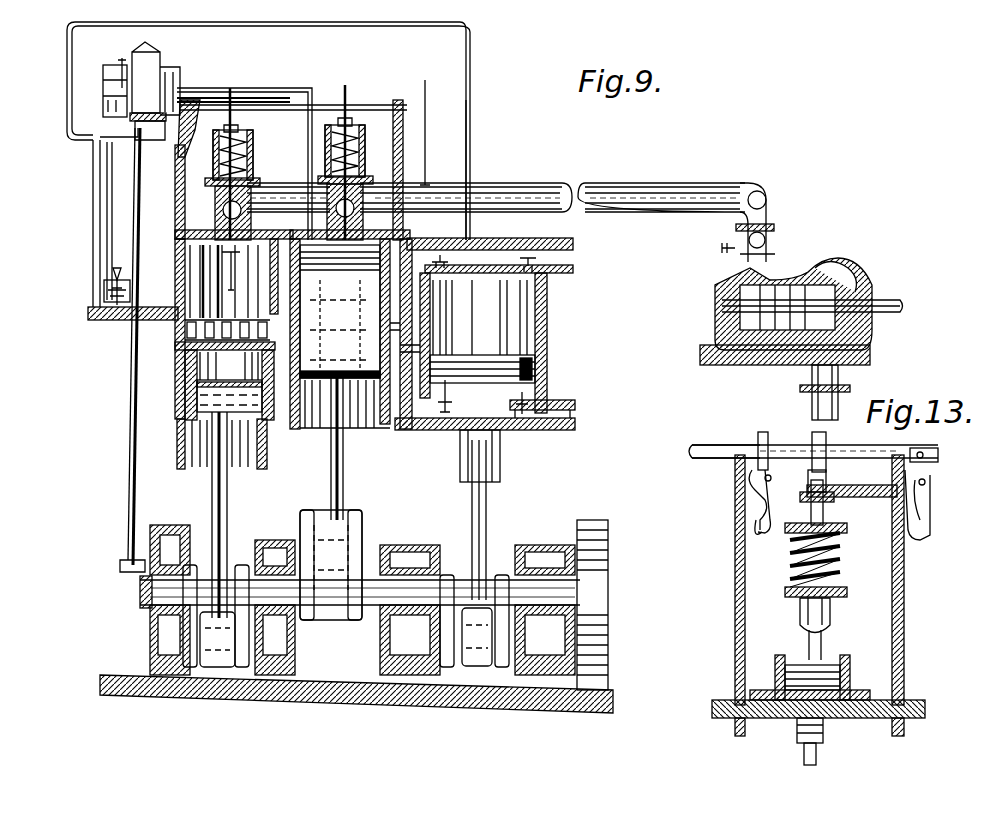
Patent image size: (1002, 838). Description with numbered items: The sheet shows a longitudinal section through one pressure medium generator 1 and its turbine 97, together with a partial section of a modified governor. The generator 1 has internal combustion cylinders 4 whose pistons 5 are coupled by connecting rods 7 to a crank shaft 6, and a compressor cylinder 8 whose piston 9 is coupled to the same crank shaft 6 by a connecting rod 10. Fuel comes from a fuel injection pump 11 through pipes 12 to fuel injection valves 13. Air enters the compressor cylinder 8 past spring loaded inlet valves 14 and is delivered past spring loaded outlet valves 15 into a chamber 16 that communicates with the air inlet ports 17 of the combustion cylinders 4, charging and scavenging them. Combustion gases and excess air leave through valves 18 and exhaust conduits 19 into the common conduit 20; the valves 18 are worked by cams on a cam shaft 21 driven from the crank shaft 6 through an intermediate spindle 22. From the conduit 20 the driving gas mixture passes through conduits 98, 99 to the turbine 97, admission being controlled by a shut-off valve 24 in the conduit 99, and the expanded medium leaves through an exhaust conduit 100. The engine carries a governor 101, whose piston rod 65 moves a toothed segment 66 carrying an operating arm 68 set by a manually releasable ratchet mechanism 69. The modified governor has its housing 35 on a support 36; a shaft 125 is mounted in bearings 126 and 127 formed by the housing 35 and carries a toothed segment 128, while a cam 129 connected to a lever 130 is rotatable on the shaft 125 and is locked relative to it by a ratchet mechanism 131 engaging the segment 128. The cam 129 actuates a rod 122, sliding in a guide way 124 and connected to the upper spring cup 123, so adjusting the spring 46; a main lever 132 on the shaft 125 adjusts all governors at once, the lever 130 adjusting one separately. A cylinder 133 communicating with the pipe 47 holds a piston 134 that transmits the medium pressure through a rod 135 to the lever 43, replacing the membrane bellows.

In FIG. 9, the pressure medium generator 1 is at (150, 672).
In FIG. 9, the internal combustion cylinder 4 is at (185, 370).
In FIG. 9, the piston 5 is at (177, 446).
In FIG. 9, the crank shaft 6 is at (396, 585).
In FIG. 9, the connecting rod 7 is at (227, 493).
In FIG. 9, the compressor cylinder 8 is at (547, 327).
In FIG. 9, the compressor piston 9 is at (540, 365).
In FIG. 9, the connecting rod 10 is at (486, 500).
In FIG. 9, the fuel injection pump 11 is at (180, 97).
In FIG. 9, the fuel pipe 12 is at (232, 90).
In FIG. 9, the fuel injection valve 13 is at (175, 222).
In FIG. 9, the spring loaded inlet valve 14 is at (548, 290).
In FIG. 9, the spring loaded outlet valve 15 is at (440, 252).
In FIG. 9, the chamber 16 is at (410, 432).
In FIG. 9, the air inlet port 17 is at (175, 345).
In FIG. 9, the exhaust valve 18 is at (222, 248).
In FIG. 9, the exhaust conduit 19 is at (265, 184).
In FIG. 9, the common conduit 20 is at (518, 184).
In FIG. 9, the cam shaft 21 is at (285, 102).
In FIG. 9, the intermediate spindle 22 is at (127, 410).
In FIG. 9, the shut-off valve 24 is at (768, 246).
In FIG. 9, the support 36 is at (93, 170).
In FIG. 13, the support 36 is at (735, 736).
In FIG. 9, the piston rod 65 is at (107, 196).
In FIG. 9, the segment 66 is at (104, 296).
In FIG. 9, the operating arm 68 is at (90, 312).
In FIG. 9, the ratchet mechanism 69 is at (112, 272).
In FIG. 9, the turbine 97 is at (808, 270).
In FIG. 9, the conduit 98 is at (662, 185).
In FIG. 9, the conduit 99 is at (758, 190).
In FIG. 9, the exhaust conduit 100 is at (812, 406).
In FIG. 9, the governor 101 is at (150, 75).
In FIG. 13, the rod 122 is at (823, 500).
In FIG. 13, the upper spring cup 123 is at (847, 528).
In FIG. 13, the guide way 124 is at (828, 480).
In FIG. 13, the shaft 125 is at (860, 445).
In FIG. 13, the bearing 126 is at (745, 447).
In FIG. 13, the bearing 127 is at (910, 448).
In FIG. 13, the toothed segment 128 is at (763, 432).
In FIG. 13, the cam 129 is at (815, 432).
In FIG. 13, the lever 130 is at (760, 530).
In FIG. 13, the ratchet mechanism 131 is at (752, 495).
In FIG. 13, the main lever 132 is at (930, 494).
In FIG. 13, the cylinder 133 is at (760, 692).
In FIG. 13, the piston 134 is at (785, 670).
In FIG. 13, the rod 135 is at (809, 645).
In FIG. 13, the governor housing 35 is at (904, 585).
In FIG. 13, the lever arm 43 is at (800, 608).
In FIG. 13, the spring 46 is at (790, 554).
In FIG. 13, the pipe 47 is at (816, 755).